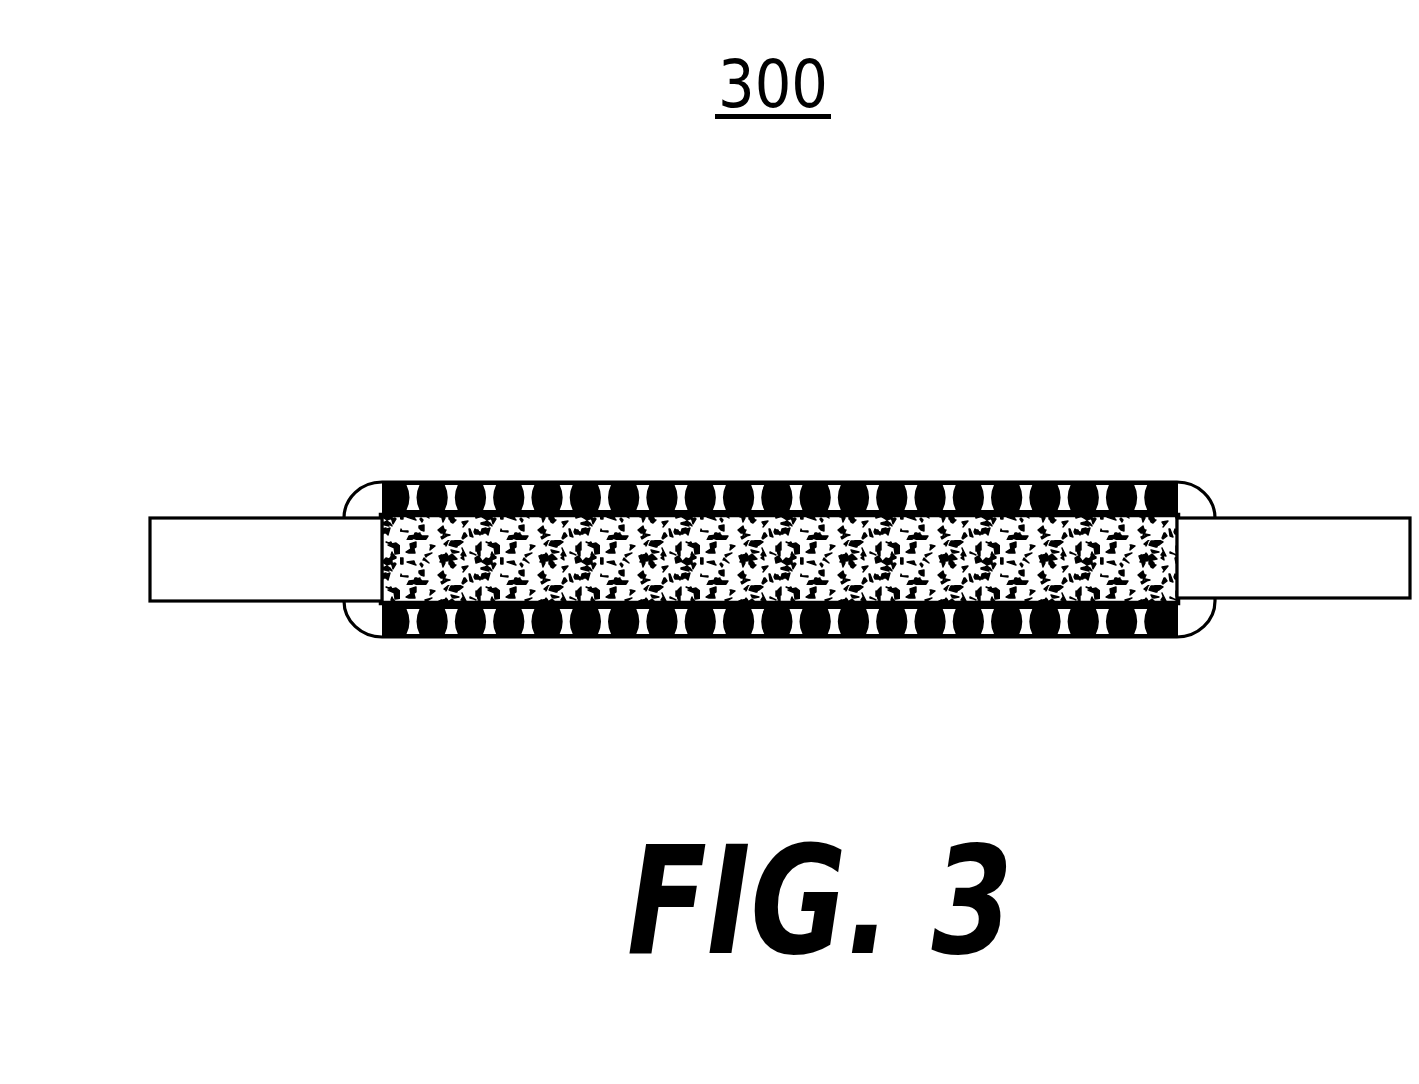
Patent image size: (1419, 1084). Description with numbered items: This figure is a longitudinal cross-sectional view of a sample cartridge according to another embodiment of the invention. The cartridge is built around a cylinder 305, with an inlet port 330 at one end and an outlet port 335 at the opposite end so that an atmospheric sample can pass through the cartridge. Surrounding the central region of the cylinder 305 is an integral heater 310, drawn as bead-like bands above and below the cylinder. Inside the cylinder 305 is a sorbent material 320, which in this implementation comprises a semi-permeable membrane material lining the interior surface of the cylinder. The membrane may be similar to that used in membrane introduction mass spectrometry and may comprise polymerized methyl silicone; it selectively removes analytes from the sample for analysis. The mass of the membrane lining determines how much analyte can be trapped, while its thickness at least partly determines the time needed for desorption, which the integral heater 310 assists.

The cylinder 305 is at (445, 426).
The integral heater 310 is at (1034, 482).
The sorbent material 320 is at (487, 580).
The inlet port 330 is at (1298, 578).
The outlet port 335 is at (228, 583).